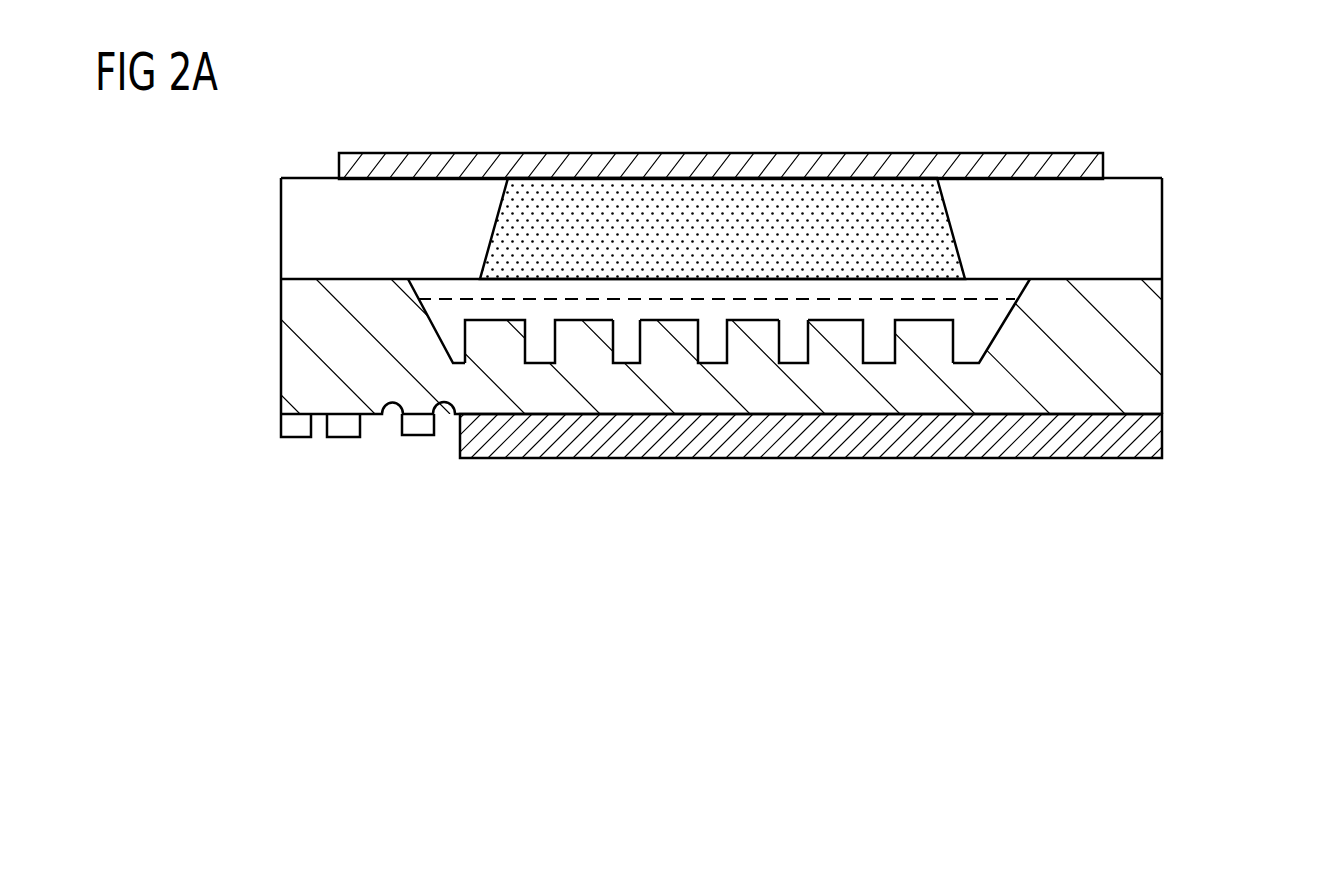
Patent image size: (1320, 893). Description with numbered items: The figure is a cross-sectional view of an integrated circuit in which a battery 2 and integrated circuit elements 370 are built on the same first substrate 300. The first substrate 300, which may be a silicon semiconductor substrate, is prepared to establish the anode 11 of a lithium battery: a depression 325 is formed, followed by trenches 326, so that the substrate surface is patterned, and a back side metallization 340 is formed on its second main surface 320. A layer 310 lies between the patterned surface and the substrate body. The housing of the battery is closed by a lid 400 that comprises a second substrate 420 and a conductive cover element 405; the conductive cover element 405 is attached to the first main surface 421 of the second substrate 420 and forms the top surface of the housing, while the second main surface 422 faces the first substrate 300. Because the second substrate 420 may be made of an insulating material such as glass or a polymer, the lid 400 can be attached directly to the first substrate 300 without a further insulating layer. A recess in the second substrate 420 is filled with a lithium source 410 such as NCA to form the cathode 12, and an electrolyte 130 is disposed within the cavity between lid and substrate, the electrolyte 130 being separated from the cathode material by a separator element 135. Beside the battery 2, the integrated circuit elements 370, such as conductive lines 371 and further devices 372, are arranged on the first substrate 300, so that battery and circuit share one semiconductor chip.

The battery 2 is at (460, 518).
The anode 11 is at (1036, 282).
The cathode 12 is at (1036, 183).
The electrolyte 130 is at (795, 335).
The separator element 135 is at (917, 298).
The first substrate 300 is at (1147, 340).
The semiconductor layer 310 is at (1135, 283).
The second main surface of the first substrate 320 is at (1143, 414).
The depression 325 is at (628, 362).
The trenches 326 is at (985, 347).
The back side metallization 340 is at (1147, 437).
The integrated circuit elements 370 is at (446, 518).
The conductive lines 371 is at (296, 438).
The further devices 372 is at (417, 436).
The lid 400 is at (1250, 155).
The conductive cover element 405 is at (1100, 176).
The conversion element 410 is at (652, 195).
The second substrate 420 is at (1150, 230).
The first main surface of the second substrate 421 is at (1143, 181).
The second main surface of the second substrate 422 is at (1143, 278).